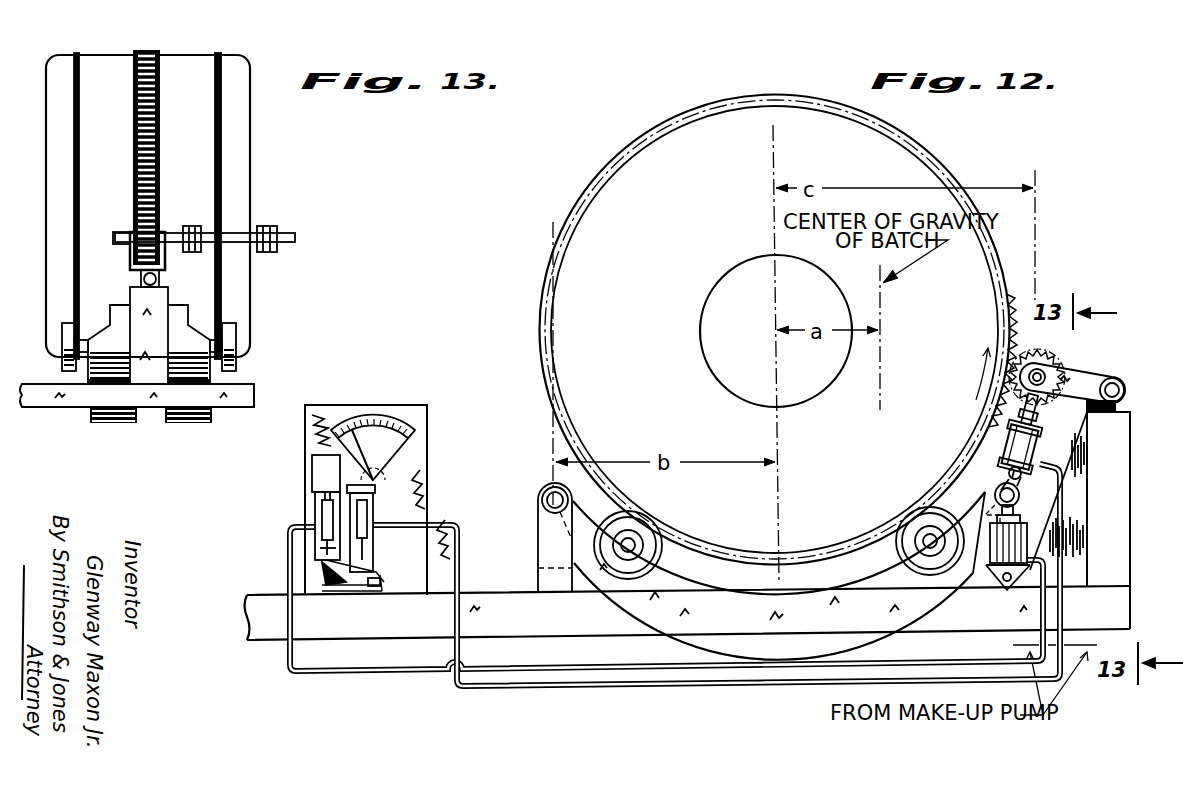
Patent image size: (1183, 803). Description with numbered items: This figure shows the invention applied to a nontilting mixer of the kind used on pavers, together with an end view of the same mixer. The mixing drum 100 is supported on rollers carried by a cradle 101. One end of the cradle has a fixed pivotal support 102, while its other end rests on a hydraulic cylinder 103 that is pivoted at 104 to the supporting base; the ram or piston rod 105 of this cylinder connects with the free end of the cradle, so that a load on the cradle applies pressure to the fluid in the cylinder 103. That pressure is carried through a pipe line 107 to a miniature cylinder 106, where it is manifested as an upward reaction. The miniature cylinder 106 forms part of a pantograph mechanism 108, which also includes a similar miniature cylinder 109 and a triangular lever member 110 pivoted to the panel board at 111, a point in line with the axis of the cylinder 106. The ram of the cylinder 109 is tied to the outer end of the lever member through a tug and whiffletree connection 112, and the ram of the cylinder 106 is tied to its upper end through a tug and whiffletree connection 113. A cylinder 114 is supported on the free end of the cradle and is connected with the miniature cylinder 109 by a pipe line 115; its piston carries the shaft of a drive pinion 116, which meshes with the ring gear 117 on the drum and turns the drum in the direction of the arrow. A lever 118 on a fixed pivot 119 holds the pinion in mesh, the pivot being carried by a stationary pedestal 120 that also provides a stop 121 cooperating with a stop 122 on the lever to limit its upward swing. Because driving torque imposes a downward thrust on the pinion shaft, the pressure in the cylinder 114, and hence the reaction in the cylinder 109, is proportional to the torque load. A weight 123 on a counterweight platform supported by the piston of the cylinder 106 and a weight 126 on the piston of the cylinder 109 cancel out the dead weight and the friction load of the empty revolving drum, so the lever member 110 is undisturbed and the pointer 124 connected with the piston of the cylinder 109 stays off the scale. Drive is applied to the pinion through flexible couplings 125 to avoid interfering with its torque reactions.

In FIG. 13, the mixing drum 100 is at (248, 132).
In FIG. 12, the mixing drum 100 is at (598, 216).
In FIG. 13, the cradle 101 is at (110, 312).
In FIG. 12, the cradle 101 is at (745, 620).
In FIG. 12, the fixed pivotal support 102 is at (548, 496).
In FIG. 12, the hydraulic cylinder 103 is at (1030, 532).
In FIG. 12, the pivot 104 is at (1007, 588).
In FIG. 12, the ram or piston rod 105 is at (998, 506).
In FIG. 12, the miniature cylinder 106 is at (318, 520).
In FIG. 12, the pipe line 107 is at (370, 673).
In FIG. 12, the pantograph mechanism 108 is at (405, 385).
In FIG. 12, the miniature cylinder 109 is at (375, 522).
In FIG. 12, the lever member 110 is at (350, 588).
In FIG. 12, the pivot 111 is at (326, 590).
In FIG. 12, the tug and whiffletree connection 112 is at (385, 544).
In FIG. 12, the tug and whiffletree connection 113 is at (318, 550).
In FIG. 12, the cylinder 114 is at (1040, 449).
In FIG. 12, the pipe line 115 is at (552, 686).
In FIG. 13, the drive pinion 116 is at (135, 230).
In FIG. 12, the drive pinion 116 is at (1046, 360).
In FIG. 13, the ring gear 117 is at (158, 52).
In FIG. 12, the ring gear 117 is at (1002, 407).
In FIG. 13, the lever 118 is at (130, 252).
In FIG. 12, the lever 118 is at (1080, 378).
In FIG. 12, the fixed pivot 119 is at (1128, 383).
In FIG. 13, the stationary pedestal 120 is at (162, 298).
In FIG. 12, the stationary pedestal 120 is at (1122, 500).
In FIG. 12, the stop 121 is at (1125, 408).
In FIG. 12, the stop 122 is at (1120, 400).
In FIG. 12, the weight 123 is at (310, 475).
In FIG. 12, the pointer 124 is at (392, 388).
In FIG. 13, the flexible couplings 125 is at (200, 212).
In FIG. 12, the weight 126 is at (380, 488).